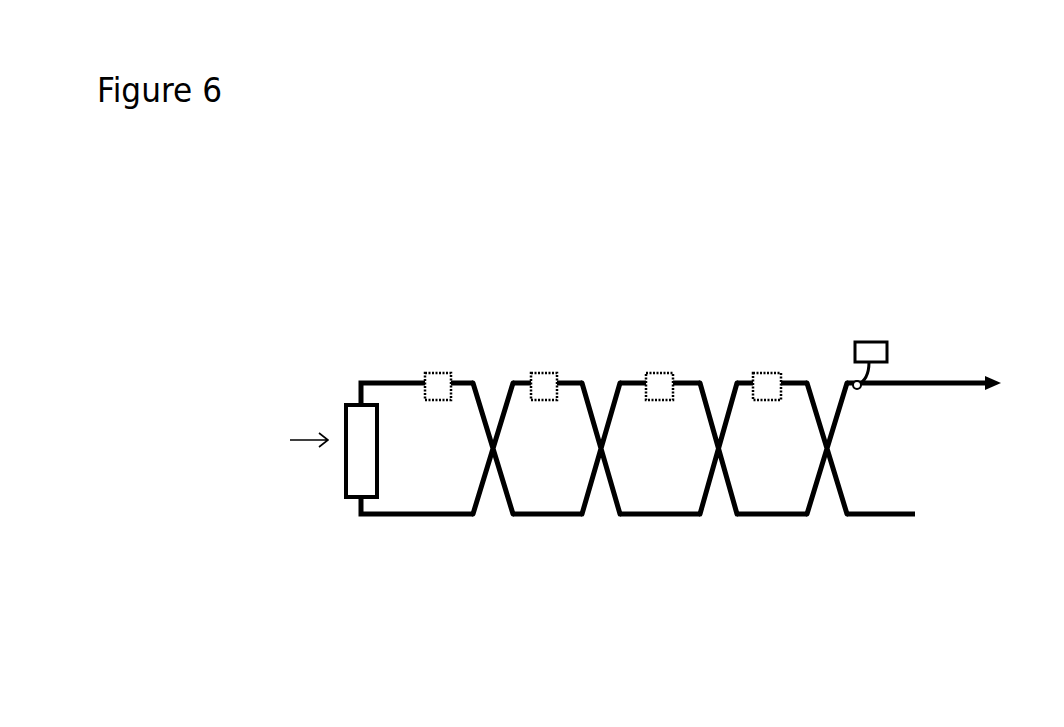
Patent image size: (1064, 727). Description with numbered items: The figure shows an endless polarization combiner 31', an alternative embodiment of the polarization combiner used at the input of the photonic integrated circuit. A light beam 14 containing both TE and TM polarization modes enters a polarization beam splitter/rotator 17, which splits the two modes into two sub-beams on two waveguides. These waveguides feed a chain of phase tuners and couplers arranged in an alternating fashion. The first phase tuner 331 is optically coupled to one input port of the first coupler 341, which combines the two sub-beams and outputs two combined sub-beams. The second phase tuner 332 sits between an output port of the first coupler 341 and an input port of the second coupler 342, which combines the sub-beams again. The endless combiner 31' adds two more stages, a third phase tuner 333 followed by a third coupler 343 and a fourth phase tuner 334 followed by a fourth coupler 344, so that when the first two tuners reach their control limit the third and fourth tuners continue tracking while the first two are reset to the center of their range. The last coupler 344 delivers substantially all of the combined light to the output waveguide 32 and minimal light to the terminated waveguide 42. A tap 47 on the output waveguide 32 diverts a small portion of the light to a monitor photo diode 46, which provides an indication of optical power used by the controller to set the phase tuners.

The light beam 14 is at (303, 437).
The polarization beam splitter/rotator 17 is at (347, 492).
The endless polarization combiner 31' is at (584, 335).
The output waveguide 32 is at (952, 386).
The first phase tuner 331 is at (418, 331).
The second phase tuner 332 is at (532, 331).
The third phase tuner 333 is at (649, 331).
The fourth phase tuner 334 is at (768, 331).
The first coupler 341 is at (494, 517).
The second coupler 342 is at (611, 517).
The third coupler 343 is at (728, 517).
The fourth coupler 344 is at (854, 517).
The terminated waveguide 42 is at (903, 517).
The monitor photo diode 46 is at (872, 342).
The tap 47 is at (868, 375).